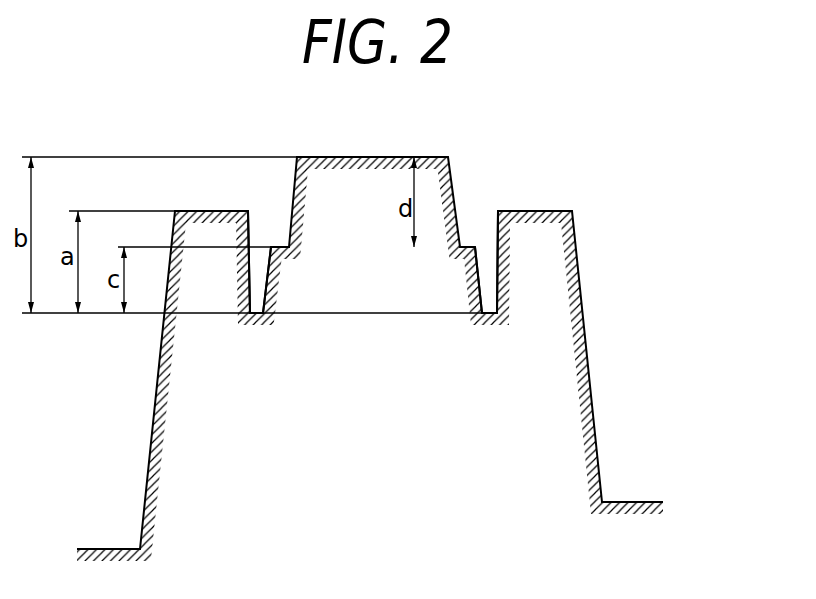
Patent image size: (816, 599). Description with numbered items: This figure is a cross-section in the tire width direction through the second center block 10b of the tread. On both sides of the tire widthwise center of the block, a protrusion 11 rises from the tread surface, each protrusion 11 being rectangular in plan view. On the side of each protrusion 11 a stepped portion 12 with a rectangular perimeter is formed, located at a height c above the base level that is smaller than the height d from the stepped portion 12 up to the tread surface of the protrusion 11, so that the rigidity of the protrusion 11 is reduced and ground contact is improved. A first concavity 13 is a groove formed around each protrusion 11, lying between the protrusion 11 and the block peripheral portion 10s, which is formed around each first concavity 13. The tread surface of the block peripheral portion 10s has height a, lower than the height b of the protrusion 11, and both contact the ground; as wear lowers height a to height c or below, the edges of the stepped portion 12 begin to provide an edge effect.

The second center block 10b is at (620, 247).
The block peripheral portion 10s is at (205, 222).
The protrusion 11 is at (333, 157).
The stepped portion 12 is at (276, 247).
The first concavity 13 is at (258, 281).